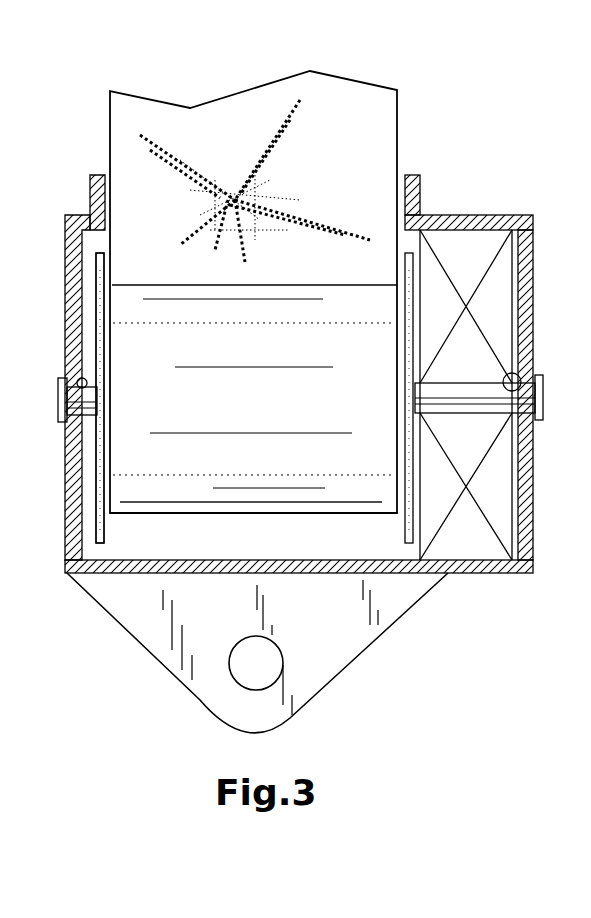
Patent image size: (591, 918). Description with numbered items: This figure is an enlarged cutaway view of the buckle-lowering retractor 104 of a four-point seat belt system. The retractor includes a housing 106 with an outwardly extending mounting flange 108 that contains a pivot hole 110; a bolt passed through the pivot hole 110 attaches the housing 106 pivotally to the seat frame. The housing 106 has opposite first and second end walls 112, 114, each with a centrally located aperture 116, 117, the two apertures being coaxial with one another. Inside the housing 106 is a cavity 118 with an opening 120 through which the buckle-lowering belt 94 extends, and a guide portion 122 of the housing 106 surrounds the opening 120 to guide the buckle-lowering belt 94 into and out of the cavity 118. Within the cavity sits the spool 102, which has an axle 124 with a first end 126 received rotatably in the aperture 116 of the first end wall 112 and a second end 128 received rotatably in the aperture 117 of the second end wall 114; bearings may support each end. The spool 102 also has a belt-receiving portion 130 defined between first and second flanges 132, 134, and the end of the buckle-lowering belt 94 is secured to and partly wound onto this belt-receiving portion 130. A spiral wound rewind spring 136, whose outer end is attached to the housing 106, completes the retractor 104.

The buckle-lowering belt 94 is at (350, 98).
The spool 102 is at (90, 289).
The buckle-lowering retractor 104 is at (81, 612).
The housing 106 is at (489, 212).
The mounting flange 108 is at (163, 630).
The pivot hole 110 is at (285, 674).
The first end wall 112 is at (75, 235).
The second end wall 114 is at (530, 543).
The aperture 116 is at (79, 380).
The aperture 117 is at (518, 375).
The cavity 118 is at (291, 540).
The opening 120 is at (108, 172).
The guide portion 122 is at (418, 183).
The axle 124 is at (468, 386).
The first end 126 is at (58, 405).
The second end 128 is at (543, 405).
The belt-receiving portion 130 is at (182, 482).
The first flange 132 is at (95, 532).
The second flange 134 is at (410, 545).
The rewind spring 136 is at (473, 543).